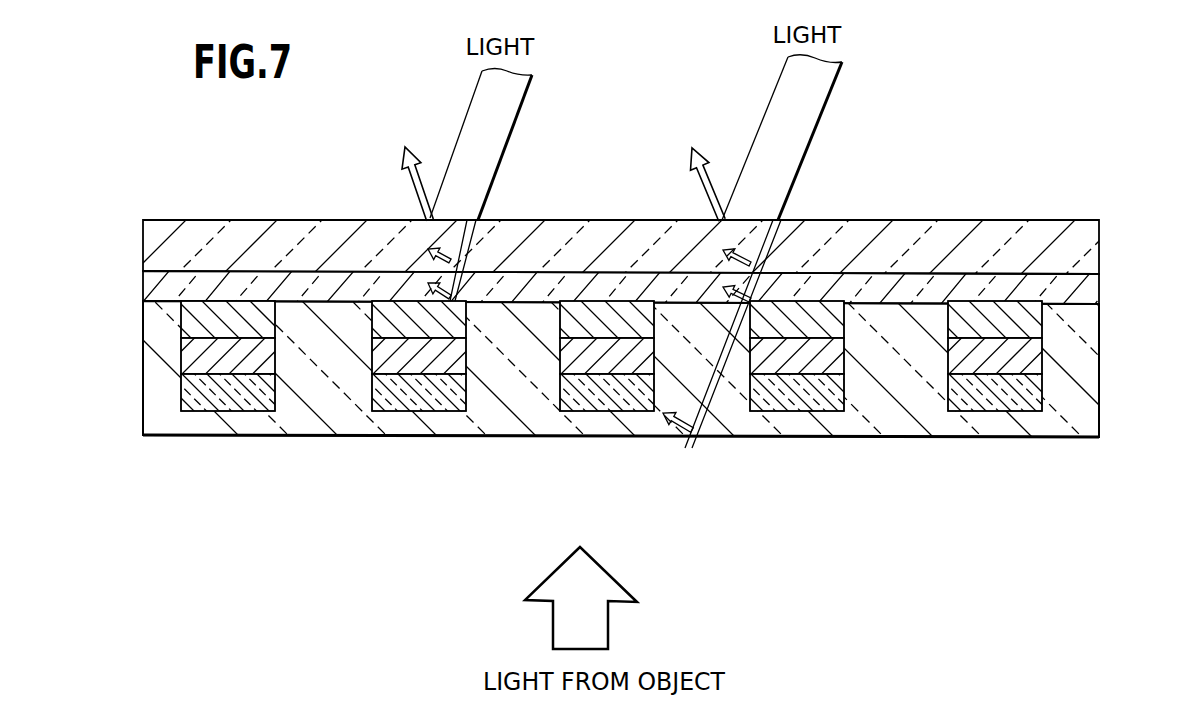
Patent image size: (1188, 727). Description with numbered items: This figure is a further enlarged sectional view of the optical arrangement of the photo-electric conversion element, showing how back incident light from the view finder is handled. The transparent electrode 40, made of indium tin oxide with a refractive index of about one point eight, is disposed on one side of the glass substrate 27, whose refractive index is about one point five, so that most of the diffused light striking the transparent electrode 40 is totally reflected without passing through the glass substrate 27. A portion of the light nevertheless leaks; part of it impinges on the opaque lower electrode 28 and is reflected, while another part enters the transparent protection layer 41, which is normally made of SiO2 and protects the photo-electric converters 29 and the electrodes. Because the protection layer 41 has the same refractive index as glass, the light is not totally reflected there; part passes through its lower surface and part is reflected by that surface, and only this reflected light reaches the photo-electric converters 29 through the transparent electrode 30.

The transparent electrode 40 is at (143, 245).
The glass substrate 27 is at (152, 283).
The protection layer 41 is at (147, 397).
The lower electrode 28 is at (1033, 320).
The photo-electric converter 29 is at (1033, 357).
The transparent electrode 30 is at (1033, 392).